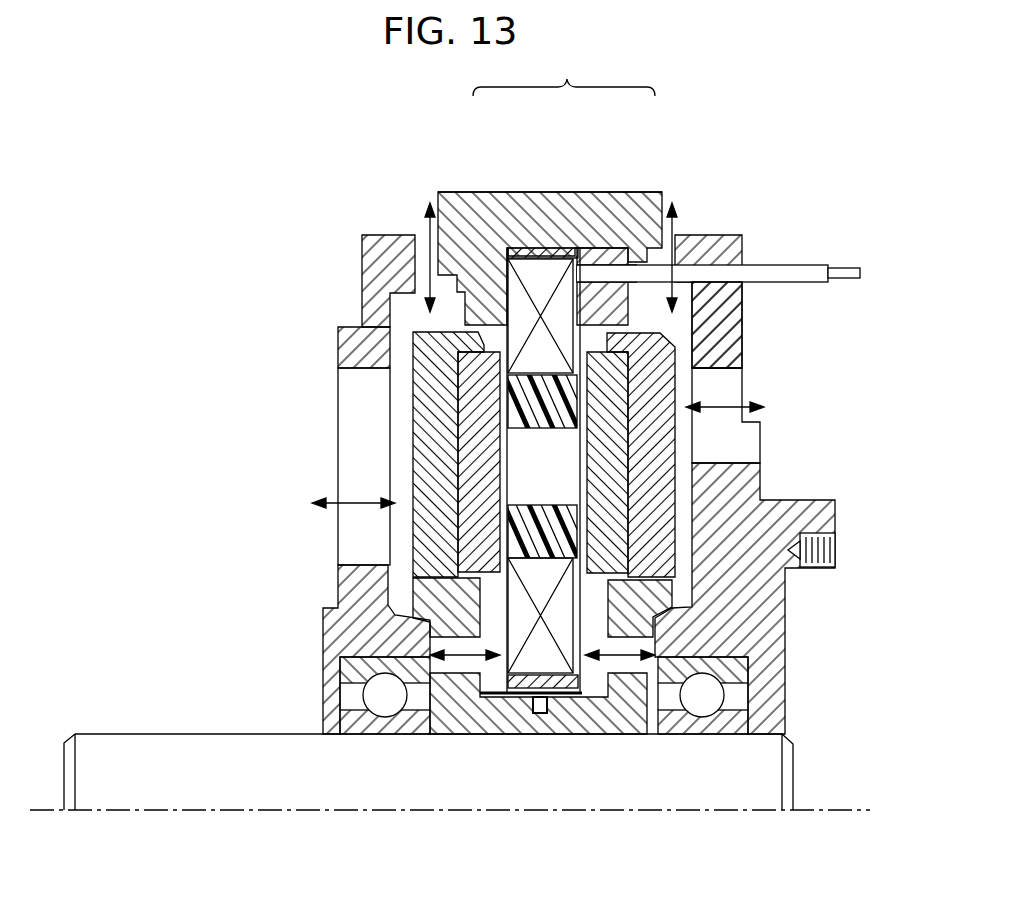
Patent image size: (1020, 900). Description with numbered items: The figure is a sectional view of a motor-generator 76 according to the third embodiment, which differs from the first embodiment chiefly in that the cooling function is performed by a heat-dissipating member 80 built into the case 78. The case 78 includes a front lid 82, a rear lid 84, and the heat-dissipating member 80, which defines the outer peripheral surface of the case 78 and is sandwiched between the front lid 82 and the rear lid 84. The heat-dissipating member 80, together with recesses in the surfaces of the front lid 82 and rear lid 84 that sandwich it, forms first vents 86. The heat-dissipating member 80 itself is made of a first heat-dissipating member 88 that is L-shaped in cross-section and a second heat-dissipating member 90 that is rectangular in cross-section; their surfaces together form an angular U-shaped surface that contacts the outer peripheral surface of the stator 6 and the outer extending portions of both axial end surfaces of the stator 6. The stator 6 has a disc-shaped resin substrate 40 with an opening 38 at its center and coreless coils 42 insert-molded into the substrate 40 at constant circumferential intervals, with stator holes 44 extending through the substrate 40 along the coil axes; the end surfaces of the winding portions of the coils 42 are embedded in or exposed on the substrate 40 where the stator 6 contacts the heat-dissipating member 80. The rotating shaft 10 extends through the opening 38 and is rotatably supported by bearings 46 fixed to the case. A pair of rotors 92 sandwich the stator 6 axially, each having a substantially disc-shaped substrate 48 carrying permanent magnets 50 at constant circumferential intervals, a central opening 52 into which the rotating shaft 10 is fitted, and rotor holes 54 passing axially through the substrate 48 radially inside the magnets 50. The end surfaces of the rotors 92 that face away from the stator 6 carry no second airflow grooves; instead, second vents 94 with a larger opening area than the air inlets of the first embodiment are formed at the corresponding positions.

The stator 6 is at (600, 688).
The rotating shaft 10 is at (357, 793).
The opening 38 is at (556, 676).
The substrate 40 is at (520, 533).
The coreless coils 42 is at (525, 667).
The stator holes 44 is at (560, 428).
The bearings 46 is at (365, 722).
The substrate 48 is at (427, 583).
The permanent magnets 50 is at (467, 472).
The opening 52 is at (637, 735).
The rotor holes 54 is at (440, 656).
The motor-generator 76 is at (538, 466).
The case 78 is at (611, 213).
The heat-dissipating member 80 is at (534, 188).
The front lid 82 is at (389, 242).
The rear lid 84 is at (705, 240).
The first vents 86 is at (422, 266).
The first heat-dissipating member 88 is at (595, 198).
The second heat-dissipating member 90 is at (617, 258).
The rotors 92 is at (416, 335).
The second vents 94 is at (343, 563).